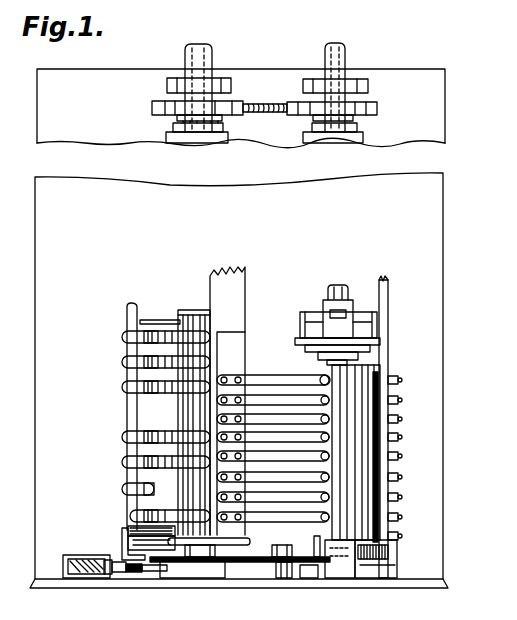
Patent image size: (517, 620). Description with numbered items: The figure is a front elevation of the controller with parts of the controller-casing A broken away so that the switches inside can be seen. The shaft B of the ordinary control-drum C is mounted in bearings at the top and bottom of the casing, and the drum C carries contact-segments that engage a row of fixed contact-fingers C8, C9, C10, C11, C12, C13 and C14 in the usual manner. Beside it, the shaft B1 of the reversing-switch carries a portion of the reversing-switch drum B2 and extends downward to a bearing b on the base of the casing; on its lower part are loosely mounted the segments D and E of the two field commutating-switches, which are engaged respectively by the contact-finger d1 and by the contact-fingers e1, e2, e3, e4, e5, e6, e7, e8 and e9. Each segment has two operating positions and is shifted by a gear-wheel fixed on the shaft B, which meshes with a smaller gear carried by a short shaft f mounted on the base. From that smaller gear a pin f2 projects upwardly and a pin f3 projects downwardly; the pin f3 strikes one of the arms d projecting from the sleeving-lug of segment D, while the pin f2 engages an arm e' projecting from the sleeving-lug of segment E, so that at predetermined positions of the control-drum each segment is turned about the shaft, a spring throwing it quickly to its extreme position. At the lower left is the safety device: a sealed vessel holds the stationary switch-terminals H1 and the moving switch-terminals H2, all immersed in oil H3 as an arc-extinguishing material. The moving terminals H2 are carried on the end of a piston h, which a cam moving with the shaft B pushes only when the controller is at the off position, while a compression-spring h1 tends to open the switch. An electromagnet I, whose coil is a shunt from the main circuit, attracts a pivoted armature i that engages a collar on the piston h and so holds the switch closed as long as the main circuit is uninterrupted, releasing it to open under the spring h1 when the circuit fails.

The controller-casing A is at (239, 376).
The shaft of the control-drum B is at (208, 47).
The shaft of the reversing-switch B1 is at (343, 46).
The reversing-switch drum B2 is at (300, 322).
The control-drum C is at (165, 332).
The contact-finger C8 is at (122, 337).
The contact-finger C9 is at (122, 362).
The contact-finger C10 is at (122, 387).
The contact-finger C11 is at (122, 437).
The contact-finger C12 is at (122, 462).
The contact-finger C13 is at (112, 492).
The contact-finger C14 is at (143, 511).
The electromagnet I is at (128, 527).
The armature i is at (122, 538).
The contact-finger d1 is at (283, 383).
The segment of the field commutating-switch D is at (367, 368).
The segment of the field commutating-switch E is at (392, 380).
The contact-finger e1 is at (402, 380).
The contact-finger e2 is at (402, 400).
The contact-finger e3 is at (402, 419).
The contact-finger e4 is at (402, 437).
The contact-finger e5 is at (402, 456).
The contact-finger e6 is at (402, 477).
The contact-finger e7 is at (402, 497).
The contact-finger e8 is at (402, 517).
The contact-finger e9 is at (402, 536).
The short shaft f is at (288, 556).
The pin f2 is at (272, 545).
The pin f3 is at (276, 566).
The arm d is at (317, 528).
The arm e' is at (309, 571).
The bearing b is at (356, 572).
The stationary switch-terminals H1 is at (75, 578).
The moving switch-terminals H2 is at (108, 574).
The oil H3 is at (90, 574).
The compression-spring h1 is at (134, 572).
The piston h is at (158, 572).